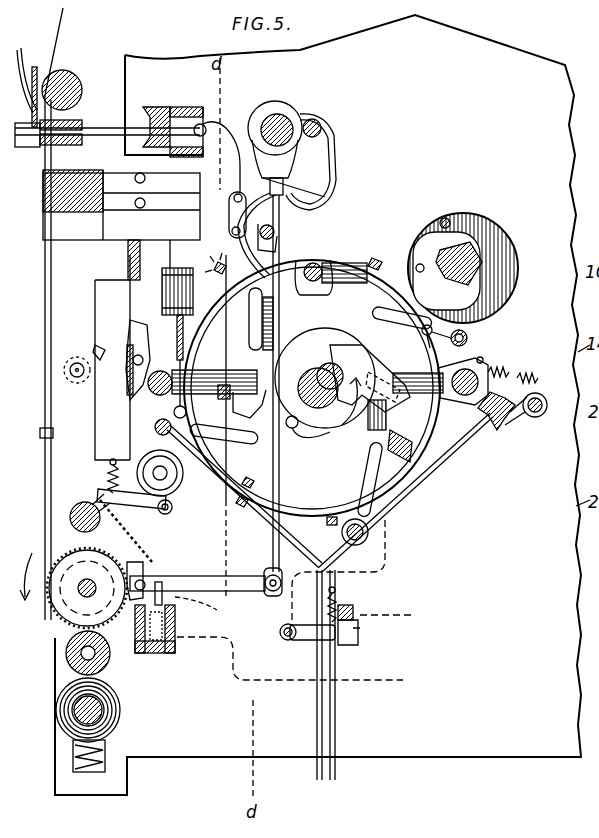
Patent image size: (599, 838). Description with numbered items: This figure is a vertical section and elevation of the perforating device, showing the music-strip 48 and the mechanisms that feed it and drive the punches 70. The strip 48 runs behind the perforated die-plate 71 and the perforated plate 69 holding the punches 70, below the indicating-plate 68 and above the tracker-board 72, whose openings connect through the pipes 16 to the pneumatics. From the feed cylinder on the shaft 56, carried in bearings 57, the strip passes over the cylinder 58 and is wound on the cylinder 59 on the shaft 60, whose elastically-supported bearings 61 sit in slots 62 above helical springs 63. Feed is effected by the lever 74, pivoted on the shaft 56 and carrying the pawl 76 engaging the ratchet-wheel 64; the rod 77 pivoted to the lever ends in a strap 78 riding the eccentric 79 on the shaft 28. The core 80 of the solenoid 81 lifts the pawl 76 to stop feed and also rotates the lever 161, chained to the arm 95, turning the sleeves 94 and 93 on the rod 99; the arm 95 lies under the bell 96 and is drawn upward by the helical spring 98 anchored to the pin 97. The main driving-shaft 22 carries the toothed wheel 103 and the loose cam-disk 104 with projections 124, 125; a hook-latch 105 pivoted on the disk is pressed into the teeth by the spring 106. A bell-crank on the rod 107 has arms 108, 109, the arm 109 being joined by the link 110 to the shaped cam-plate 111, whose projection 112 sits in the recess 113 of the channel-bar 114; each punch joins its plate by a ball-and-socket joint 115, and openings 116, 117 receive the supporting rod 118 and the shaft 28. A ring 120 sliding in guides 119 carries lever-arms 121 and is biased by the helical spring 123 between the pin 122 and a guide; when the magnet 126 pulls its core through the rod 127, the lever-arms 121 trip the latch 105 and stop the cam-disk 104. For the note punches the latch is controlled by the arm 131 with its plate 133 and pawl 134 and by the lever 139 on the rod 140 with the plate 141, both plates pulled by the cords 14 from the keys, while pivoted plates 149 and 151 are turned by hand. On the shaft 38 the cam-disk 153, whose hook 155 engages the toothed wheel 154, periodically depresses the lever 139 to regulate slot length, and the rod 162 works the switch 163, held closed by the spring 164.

The cords 14 is at (314, 700).
The pipes 16 is at (118, 172).
The main driving-shaft 22 is at (318, 418).
The shaft 28 is at (272, 103).
The shaft 38 is at (510, 270).
The music-strip 48 is at (66, 16).
The shaft 56 is at (58, 590).
The bearings 57 is at (40, 434).
The cylinder 58 is at (68, 653).
The cylinder 59 is at (58, 708).
The shaft 60 is at (120, 708).
The elastically-supported bearings 61 is at (104, 714).
The slots 62 is at (105, 758).
The helical springs 63 is at (92, 764).
The ratchet-wheel 64 is at (60, 621).
The indicating-plate 68 is at (28, 80).
The perforated plate 69 is at (80, 117).
The punches 70 is at (112, 128).
The perforated die-plate 71 is at (32, 148).
The tracker-board 72 is at (42, 205).
The lever 74 is at (200, 582).
The pawl 76 is at (150, 568).
The rod 77 is at (266, 548).
The strap 78 is at (320, 118).
The eccentric 79 is at (304, 116).
The core 80 is at (178, 608).
The solenoid 81 is at (176, 650).
The sleeve 93 is at (82, 504).
The sleeve 94 is at (72, 520).
The arm 95 is at (136, 506).
The bell 96 is at (183, 488).
The pin 97 is at (113, 460).
The helical spring 98 is at (108, 503).
The rod 99 is at (72, 513).
The toothed wheel 103 is at (330, 378).
The cam-disk 104 is at (318, 350).
The hook-latch 105 is at (335, 432).
The spring 106 is at (257, 411).
The rod 107 is at (340, 262).
The arm 108 is at (254, 342).
The arm 109 is at (278, 242).
The link 110 is at (229, 222).
The shaped cam-plate 111 is at (240, 170).
The projection 112 is at (206, 126).
The recess 113 is at (185, 115).
The channel-bar 114 is at (163, 105).
The ball-and-socket joint 115 is at (192, 172).
The opening 116 is at (322, 158).
The opening 117 is at (327, 197).
The rod 118 is at (340, 127).
The guides 119 is at (380, 255).
The ring 120 is at (402, 510).
The lever-arms 121 is at (395, 324).
The pin 122 is at (403, 484).
The helical spring 123 is at (440, 408).
The projection 124 is at (380, 378).
The projection 125 is at (245, 372).
The magnet 126 is at (165, 292).
The rod 127 is at (172, 368).
The arm 131 is at (318, 375).
The plate 133 is at (77, 384).
The pawl 134 is at (128, 340).
The lever 139 is at (468, 340).
The rod 140 is at (487, 364).
The plate 141 is at (492, 427).
The pivoted plate 149 is at (95, 348).
The plate 151 is at (524, 425).
The cam-disk 153 is at (478, 240).
The toothed wheel 154 is at (485, 262).
The hook 155 is at (450, 218).
The lever 161 is at (140, 566).
The rod 162 is at (336, 720).
The switch 163 is at (295, 645).
The spring 164 is at (340, 590).